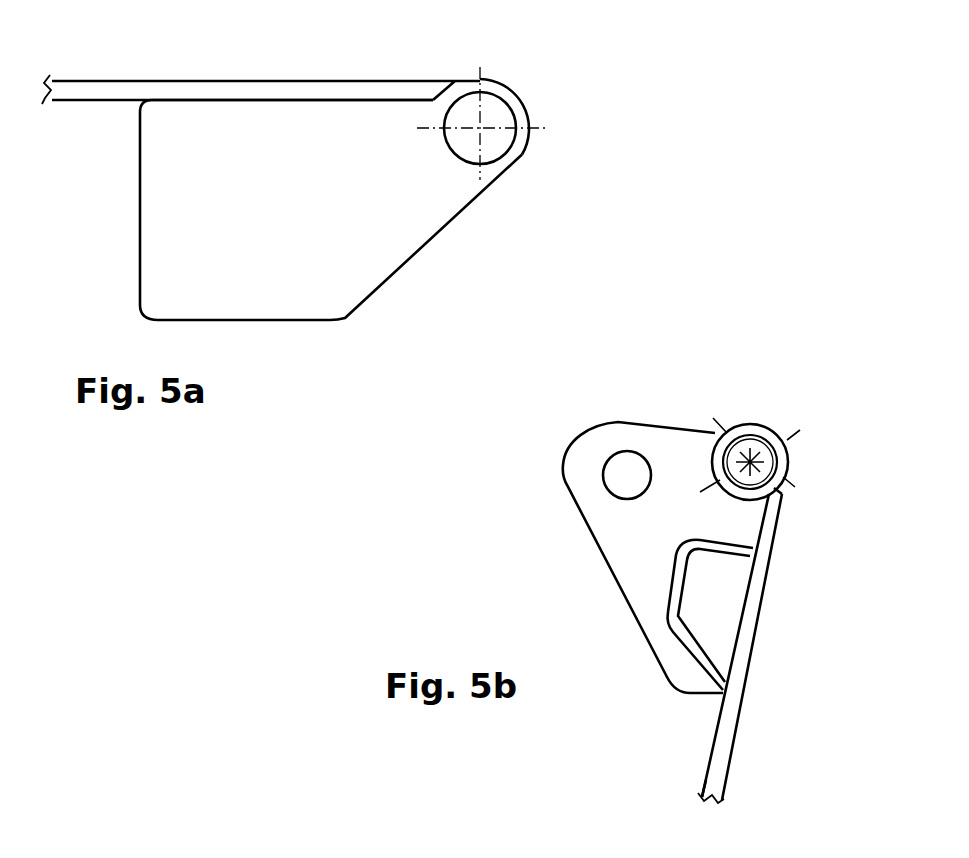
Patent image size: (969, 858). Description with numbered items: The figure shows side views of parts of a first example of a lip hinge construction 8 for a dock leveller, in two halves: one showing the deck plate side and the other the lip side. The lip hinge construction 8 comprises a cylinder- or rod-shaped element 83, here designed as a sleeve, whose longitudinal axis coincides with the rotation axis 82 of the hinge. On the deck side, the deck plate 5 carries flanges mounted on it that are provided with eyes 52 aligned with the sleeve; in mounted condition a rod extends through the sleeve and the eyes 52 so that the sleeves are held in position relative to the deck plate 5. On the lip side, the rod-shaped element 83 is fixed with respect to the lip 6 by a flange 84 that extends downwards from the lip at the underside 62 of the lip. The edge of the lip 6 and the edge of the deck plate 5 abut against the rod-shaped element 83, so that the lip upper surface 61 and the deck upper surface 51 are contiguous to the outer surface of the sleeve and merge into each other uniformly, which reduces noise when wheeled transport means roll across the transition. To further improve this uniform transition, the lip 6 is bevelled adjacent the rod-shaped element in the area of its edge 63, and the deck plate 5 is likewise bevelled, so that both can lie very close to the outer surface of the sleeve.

In FIG. 5A, the deck plate 5 is at (100, 81).
In FIG. 5A, the deck upper surface 51 is at (236, 197).
In FIG. 5A, the eye 52 is at (437, 90).
In FIG. 5A, the rotation axis 82 is at (480, 128).
In FIG. 5B, the rotation axis 82 is at (750, 462).
In FIG. 5B, the rod-shaped element 83 is at (758, 443).
In FIG. 5B, the flange 84 is at (643, 534).
In FIG. 5B, the lip hinge construction 8 is at (623, 568).
In FIG. 5B, the lip 6 is at (742, 657).
In FIG. 5B, the lip upper surface 61 is at (768, 557).
In FIG. 5B, the underside of the lip 62 is at (712, 742).
In FIG. 5B, the edge of the lip 63 is at (778, 488).